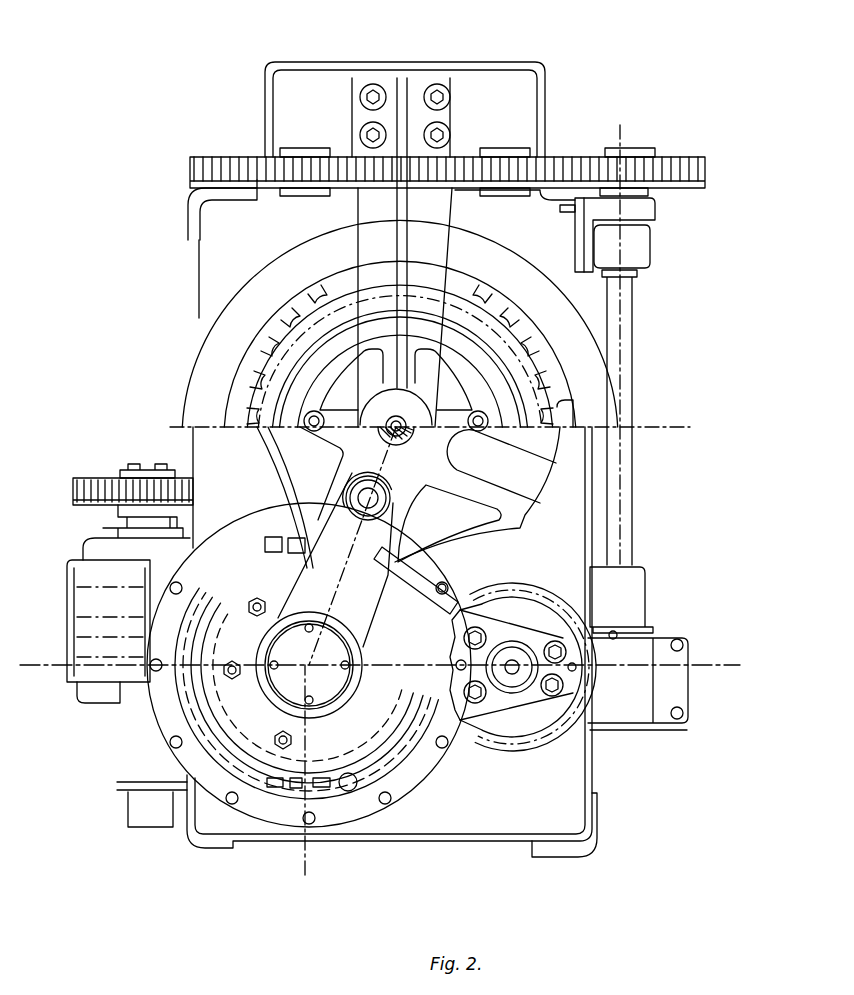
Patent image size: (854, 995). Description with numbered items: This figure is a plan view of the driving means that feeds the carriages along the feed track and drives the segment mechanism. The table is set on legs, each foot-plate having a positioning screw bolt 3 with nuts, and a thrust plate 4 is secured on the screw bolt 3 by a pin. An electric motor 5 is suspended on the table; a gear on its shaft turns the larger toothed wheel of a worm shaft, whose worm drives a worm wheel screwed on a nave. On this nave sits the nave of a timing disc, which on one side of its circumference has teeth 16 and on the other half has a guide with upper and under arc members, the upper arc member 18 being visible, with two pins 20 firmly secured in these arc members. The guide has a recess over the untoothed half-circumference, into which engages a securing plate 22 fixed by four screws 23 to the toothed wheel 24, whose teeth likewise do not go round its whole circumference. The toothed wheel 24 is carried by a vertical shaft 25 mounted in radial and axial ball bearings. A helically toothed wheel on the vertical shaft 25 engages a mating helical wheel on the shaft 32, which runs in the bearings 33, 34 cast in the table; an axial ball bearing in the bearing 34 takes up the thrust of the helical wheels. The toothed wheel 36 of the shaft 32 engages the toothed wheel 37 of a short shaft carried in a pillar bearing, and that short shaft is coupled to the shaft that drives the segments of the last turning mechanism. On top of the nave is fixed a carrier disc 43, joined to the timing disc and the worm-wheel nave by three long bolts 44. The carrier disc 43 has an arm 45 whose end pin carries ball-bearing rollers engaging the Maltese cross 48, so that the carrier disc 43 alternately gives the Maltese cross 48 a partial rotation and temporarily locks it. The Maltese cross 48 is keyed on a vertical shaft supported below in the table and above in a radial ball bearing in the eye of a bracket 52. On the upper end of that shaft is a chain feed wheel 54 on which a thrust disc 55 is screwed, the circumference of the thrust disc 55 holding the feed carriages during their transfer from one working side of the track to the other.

The positioning screw bolt 3 is at (377, 664).
The thrust plate 4 is at (460, 500).
The electric motor 5 is at (90, 692).
The teeth 16 is at (286, 793).
The upper arc member 18 is at (388, 738).
The pins 20 is at (355, 782).
The securing plate 22 is at (502, 703).
The screws 23 is at (555, 695).
The toothed wheel 24 is at (545, 590).
The vertical shaft 25 is at (513, 678).
The shaft 32 is at (620, 508).
The bearing 33 is at (632, 588).
The bearing 34 is at (640, 248).
The toothed wheel 36 is at (530, 170).
The toothed wheel 37 is at (642, 172).
The carrier disc 43 is at (260, 727).
The long bolts 44 is at (283, 740).
The arm 45 is at (363, 607).
The Maltese cross 48 is at (517, 512).
The bracket 52 is at (447, 82).
The chain feed wheel 54 is at (280, 330).
The thrust disc 55 is at (190, 378).